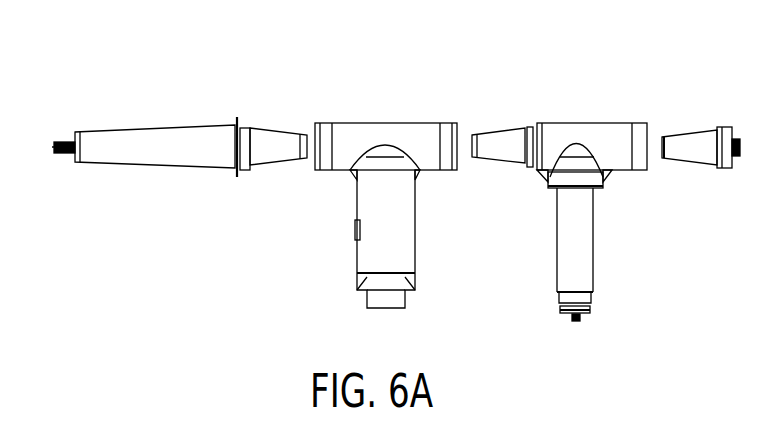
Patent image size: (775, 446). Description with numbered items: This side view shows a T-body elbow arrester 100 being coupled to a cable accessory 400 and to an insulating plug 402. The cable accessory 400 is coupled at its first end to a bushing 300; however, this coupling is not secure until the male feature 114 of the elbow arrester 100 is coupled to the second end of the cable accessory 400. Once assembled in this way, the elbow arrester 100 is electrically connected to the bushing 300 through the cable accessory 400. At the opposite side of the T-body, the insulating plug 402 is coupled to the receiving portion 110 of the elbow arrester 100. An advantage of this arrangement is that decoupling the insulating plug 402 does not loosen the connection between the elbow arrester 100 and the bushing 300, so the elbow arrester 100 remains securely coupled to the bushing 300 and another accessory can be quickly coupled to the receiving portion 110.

The bushing 300 is at (183, 104).
The cable accessory 400 is at (380, 104).
The elbow arrester 100 is at (574, 180).
The male feature 114 is at (498, 164).
The receiving portion 110 is at (637, 171).
The insulating plug 402 is at (697, 110).